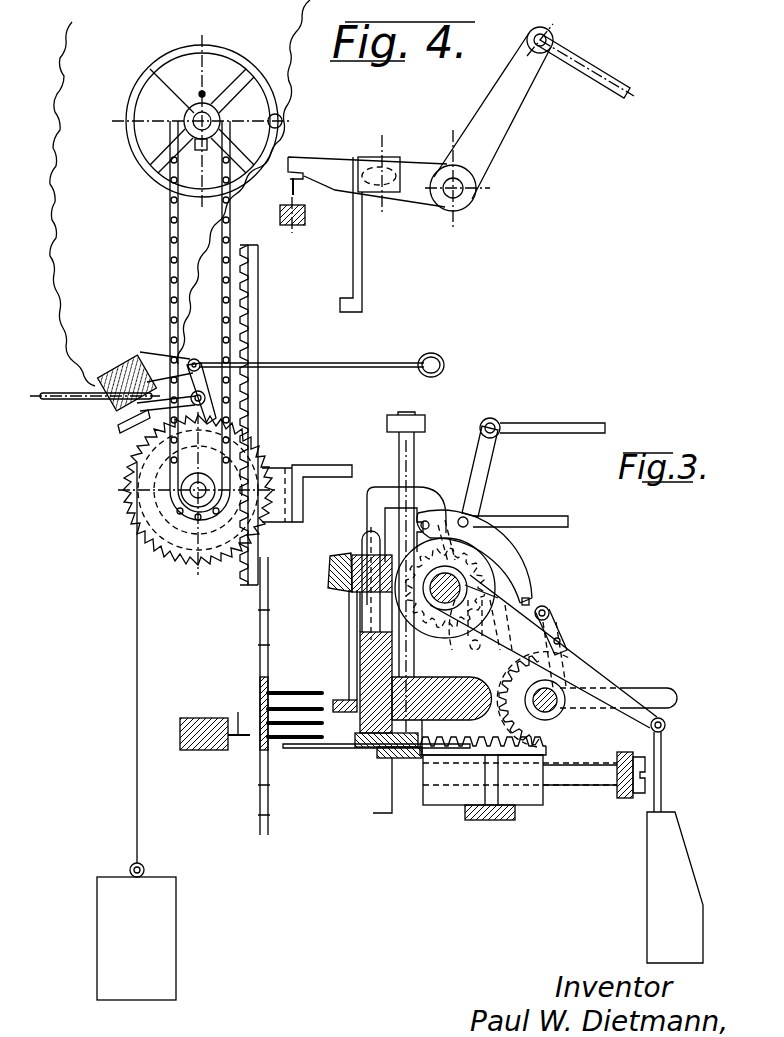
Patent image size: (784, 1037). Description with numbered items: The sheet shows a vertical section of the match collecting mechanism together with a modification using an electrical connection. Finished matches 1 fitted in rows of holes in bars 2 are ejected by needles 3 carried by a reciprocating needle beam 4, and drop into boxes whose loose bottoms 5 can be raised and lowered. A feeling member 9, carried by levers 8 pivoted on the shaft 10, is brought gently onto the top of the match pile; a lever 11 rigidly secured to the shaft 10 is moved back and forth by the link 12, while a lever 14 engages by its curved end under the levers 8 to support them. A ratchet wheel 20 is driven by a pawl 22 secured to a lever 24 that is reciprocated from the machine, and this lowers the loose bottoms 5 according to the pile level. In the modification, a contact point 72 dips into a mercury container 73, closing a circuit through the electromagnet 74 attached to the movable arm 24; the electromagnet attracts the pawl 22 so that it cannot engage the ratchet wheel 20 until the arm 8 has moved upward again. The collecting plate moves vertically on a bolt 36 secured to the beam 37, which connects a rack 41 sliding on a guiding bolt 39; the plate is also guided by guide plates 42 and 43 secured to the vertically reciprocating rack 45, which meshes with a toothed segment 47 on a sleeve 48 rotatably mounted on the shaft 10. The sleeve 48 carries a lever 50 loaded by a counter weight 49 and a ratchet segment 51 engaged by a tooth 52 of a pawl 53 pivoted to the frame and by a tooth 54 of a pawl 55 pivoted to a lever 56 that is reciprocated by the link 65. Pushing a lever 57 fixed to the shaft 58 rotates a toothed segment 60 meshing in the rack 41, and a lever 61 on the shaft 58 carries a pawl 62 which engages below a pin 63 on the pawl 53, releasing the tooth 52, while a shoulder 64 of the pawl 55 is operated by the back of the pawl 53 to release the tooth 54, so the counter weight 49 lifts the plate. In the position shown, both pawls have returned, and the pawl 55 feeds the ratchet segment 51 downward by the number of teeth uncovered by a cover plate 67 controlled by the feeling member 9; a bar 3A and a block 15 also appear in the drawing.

In FIG. 3, the finished matches 1 is at (305, 698).
In FIG. 3, the bars 2 is at (262, 683).
In FIG. 3, the needles 3 is at (229, 713).
In FIG. 3, the bar 3A is at (313, 750).
In FIG. 3, the needle beam 4 is at (192, 722).
In FIG. 4, the bottoms 5 is at (331, 466).
In FIG. 4, the levers 8 is at (328, 165).
In FIG. 3, the levers 8 is at (350, 560).
In FIG. 4, the feeling member 9 is at (353, 276).
In FIG. 3, the feeling member 9 is at (348, 657).
In FIG. 3, the shaft 10 is at (467, 583).
In FIG. 3, the lever 11 is at (477, 449).
In FIG. 3, the link 12 is at (546, 422).
In FIG. 3, the lever 14 is at (372, 620).
In FIG. 3, the block 15 is at (338, 590).
In FIG. 4, the ratchet wheel 20 is at (128, 518).
In FIG. 4, the pawl 22 is at (180, 400).
In FIG. 4, the lever 24 is at (208, 399).
In FIG. 3, the bolt 36 is at (492, 793).
In FIG. 3, the beam 37 is at (486, 810).
In FIG. 3, the guiding bolt 39 is at (581, 775).
In FIG. 3, the rack 41 is at (528, 800).
In FIG. 3, the guide plate 42 is at (381, 760).
In FIG. 3, the guide plate 43 is at (376, 750).
In FIG. 3, the rack 45 is at (397, 455).
In FIG. 3, the toothed segment 47 is at (361, 543).
In FIG. 3, the sleeve 48 is at (445, 630).
In FIG. 3, the counter weight 49 is at (673, 848).
In FIG. 3, the lever 50 is at (597, 679).
In FIG. 3, the ratchet segment 51 is at (455, 637).
In FIG. 3, the tooth 52 is at (485, 540).
In FIG. 3, the pawl 53 is at (438, 520).
In FIG. 3, the tooth 54 is at (500, 580).
In FIG. 3, the pawl 55 is at (530, 597).
In FIG. 3, the lever 56 is at (462, 537).
In FIG. 3, the lever 57 is at (660, 690).
In FIG. 3, the shaft 58 is at (568, 720).
In FIG. 3, the toothed segment 60 is at (548, 746).
In FIG. 3, the lever 61 is at (560, 660).
In FIG. 3, the pawl 62 is at (562, 628).
In FIG. 3, the pin 63 is at (527, 658).
In FIG. 3, the shoulder 64 is at (533, 603).
In FIG. 3, the link 65 is at (582, 526).
In FIG. 3, the cover plate 67 is at (478, 628).
In FIG. 4, the contact point 72 is at (294, 190).
In FIG. 4, the mercury container 73 is at (304, 215).
In FIG. 4, the electromagnet 74 is at (124, 375).